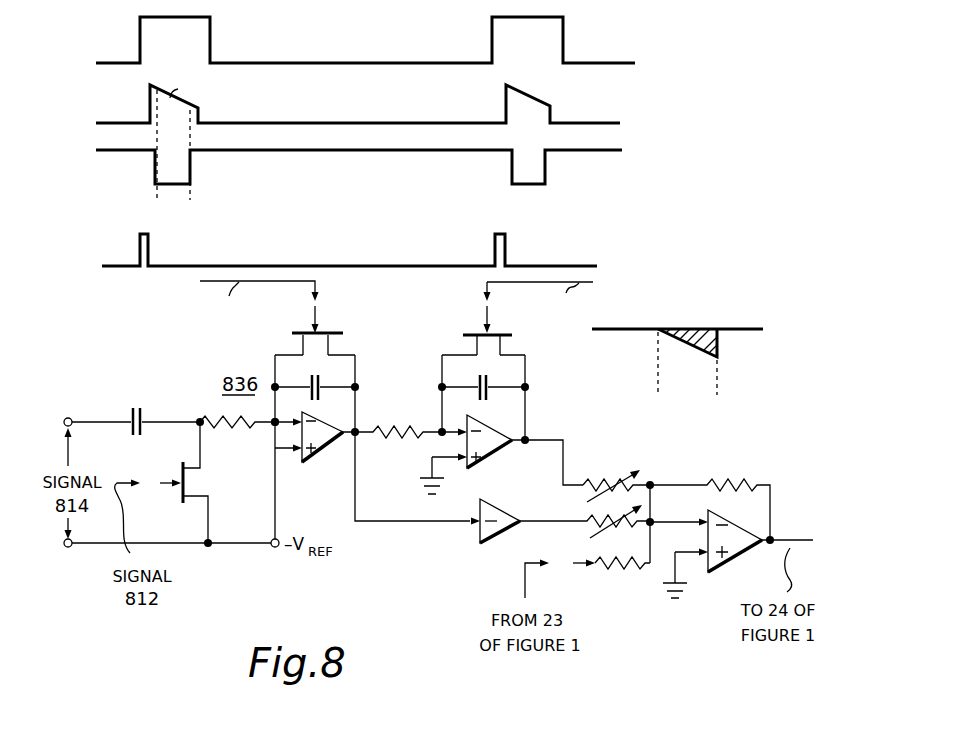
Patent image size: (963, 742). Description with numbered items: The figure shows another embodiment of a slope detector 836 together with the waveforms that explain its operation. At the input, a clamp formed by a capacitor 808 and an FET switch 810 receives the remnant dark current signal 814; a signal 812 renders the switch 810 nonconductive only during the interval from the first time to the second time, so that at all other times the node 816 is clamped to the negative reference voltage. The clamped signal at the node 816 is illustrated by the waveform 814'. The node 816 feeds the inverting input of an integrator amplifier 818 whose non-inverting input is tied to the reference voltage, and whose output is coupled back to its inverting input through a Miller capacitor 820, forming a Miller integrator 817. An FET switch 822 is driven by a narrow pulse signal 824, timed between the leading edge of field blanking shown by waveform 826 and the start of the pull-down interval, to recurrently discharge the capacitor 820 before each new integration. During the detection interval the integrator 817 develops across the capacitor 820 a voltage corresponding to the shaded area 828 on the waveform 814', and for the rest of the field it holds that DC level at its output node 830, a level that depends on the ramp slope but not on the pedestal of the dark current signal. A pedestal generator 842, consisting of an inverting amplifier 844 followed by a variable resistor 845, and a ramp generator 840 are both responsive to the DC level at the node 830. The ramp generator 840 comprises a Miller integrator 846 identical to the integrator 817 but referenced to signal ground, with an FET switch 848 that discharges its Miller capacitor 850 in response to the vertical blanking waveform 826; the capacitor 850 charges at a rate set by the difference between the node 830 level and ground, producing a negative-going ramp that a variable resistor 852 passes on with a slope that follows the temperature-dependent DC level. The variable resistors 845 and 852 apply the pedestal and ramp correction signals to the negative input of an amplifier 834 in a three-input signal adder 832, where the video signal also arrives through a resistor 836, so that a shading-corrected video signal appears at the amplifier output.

The capacitor 808 is at (140, 401).
The FET switch 810 is at (179, 484).
The signal 812 is at (192, 178).
The remnant dark current signal 814 is at (358, 151).
The waveform 814' is at (623, 354).
The node 816 is at (205, 425).
The Miller integrator 817 is at (422, 404).
The integrator amplifier 818 is at (328, 452).
The Miller capacitor 820 is at (320, 378).
The FET switch 822 is at (331, 333).
The narrow pulse signal waveform 824 is at (150, 253).
The field blanking waveform 826 is at (211, 40).
The shaded area 828 is at (685, 326).
The node 830 is at (360, 436).
The signal adder 832 is at (740, 467).
The amplifier 834 is at (724, 568).
The slope detector / resistor 836 is at (620, 570).
The ramp generator 840 is at (599, 405).
The pedestal generator 842 is at (522, 499).
The inverting amplifier 844 is at (484, 545).
The variable resistor 845 is at (584, 521).
The Miller integrator 846 is at (480, 425).
The FET switch 848 is at (462, 330).
The Miller capacitor 850 is at (488, 378).
The variable resistor 852 is at (596, 474).